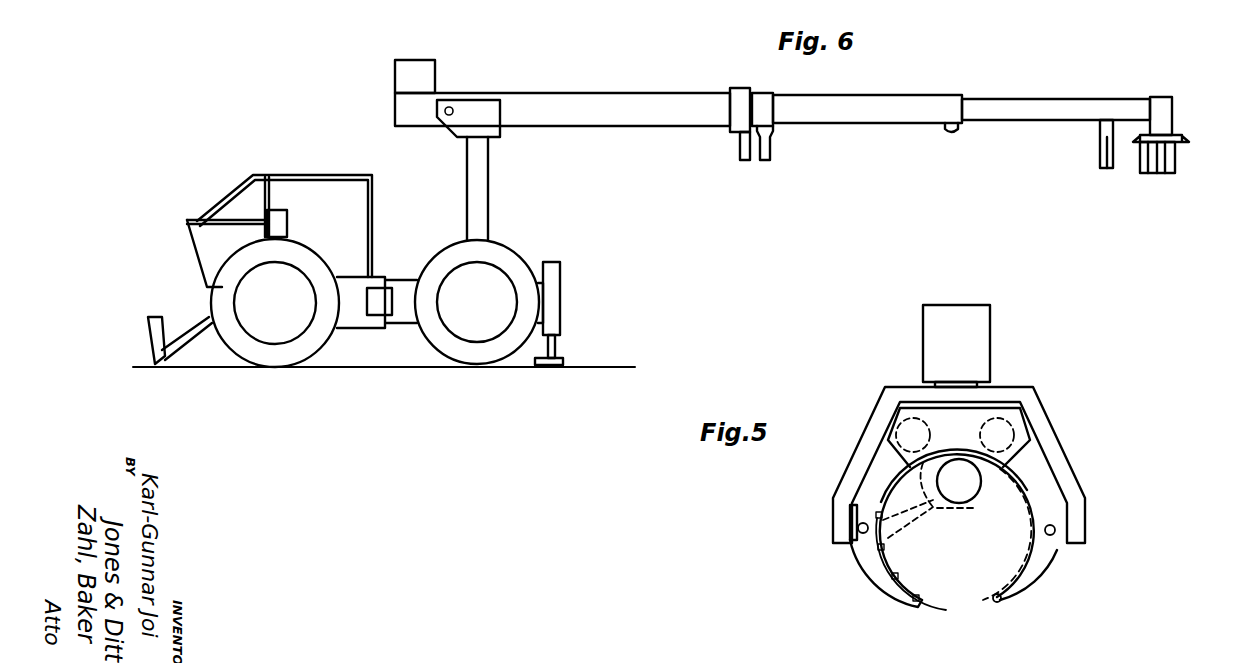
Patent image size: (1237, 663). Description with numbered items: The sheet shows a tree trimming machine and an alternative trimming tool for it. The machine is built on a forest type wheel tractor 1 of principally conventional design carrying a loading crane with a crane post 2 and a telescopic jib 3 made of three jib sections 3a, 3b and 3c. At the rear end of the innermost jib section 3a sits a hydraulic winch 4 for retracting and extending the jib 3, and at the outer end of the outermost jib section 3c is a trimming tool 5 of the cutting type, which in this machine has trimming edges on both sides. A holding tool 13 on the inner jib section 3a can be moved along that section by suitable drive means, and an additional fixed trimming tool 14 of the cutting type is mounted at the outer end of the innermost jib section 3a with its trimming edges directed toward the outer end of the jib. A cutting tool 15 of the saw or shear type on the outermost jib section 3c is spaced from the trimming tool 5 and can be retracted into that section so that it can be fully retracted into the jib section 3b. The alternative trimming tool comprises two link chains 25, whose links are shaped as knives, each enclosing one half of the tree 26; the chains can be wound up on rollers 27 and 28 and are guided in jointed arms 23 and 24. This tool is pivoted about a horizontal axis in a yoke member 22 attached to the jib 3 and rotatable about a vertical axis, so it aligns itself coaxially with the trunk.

In FIG. 6, the forest type wheel tractor 1 is at (410, 288).
In FIG. 6, the crane post 2 is at (487, 198).
In FIG. 6, the telescopic jib 3 is at (772, 120).
In FIG. 5, the telescopic jib 3 is at (985, 340).
In FIG. 6, the innermost jib section 3a is at (618, 120).
In FIG. 6, the jib section 3b is at (872, 117).
In FIG. 6, the outermost jib section 3c is at (1043, 115).
In FIG. 6, the hydraulic winch 4 is at (430, 70).
In FIG. 6, the trimming tool 5 is at (1168, 128).
In FIG. 6, the holding tool 13 is at (735, 128).
In FIG. 6, the fixed trimming tool 14 is at (765, 153).
In FIG. 6, the cutting tool 15 is at (1102, 160).
In FIG. 5, the yoke member 22 is at (862, 453).
In FIG. 5, the jointed arm 23 is at (858, 553).
In FIG. 5, the jointed arm 24 is at (1053, 552).
In FIG. 5, the link chains 25 is at (892, 575).
In FIG. 5, the tree 26 is at (977, 577).
In FIG. 5, the roller 27 is at (1000, 427).
In FIG. 5, the roller 28 is at (917, 432).